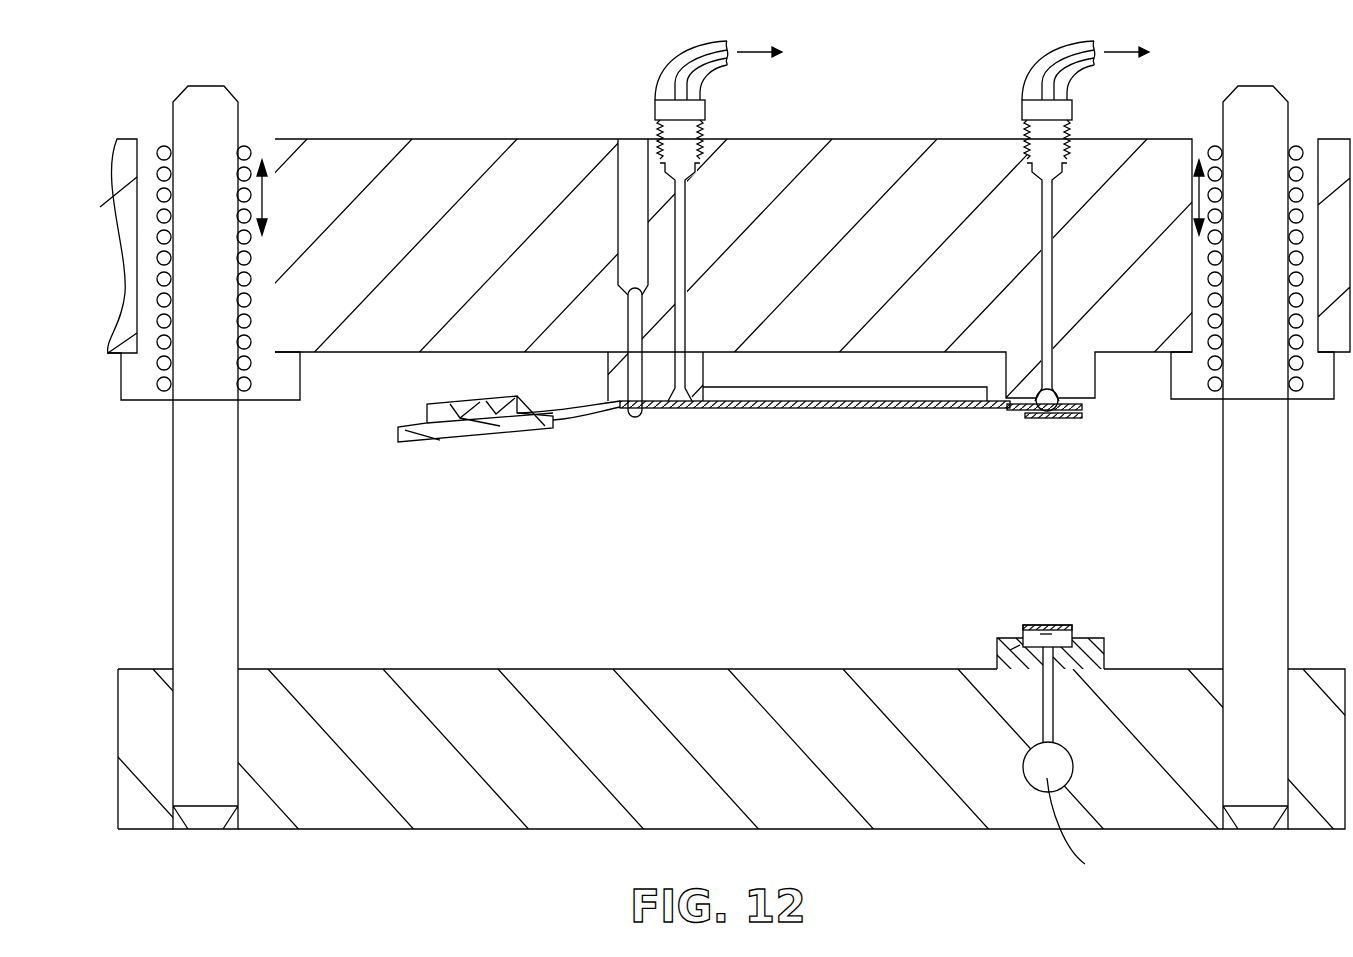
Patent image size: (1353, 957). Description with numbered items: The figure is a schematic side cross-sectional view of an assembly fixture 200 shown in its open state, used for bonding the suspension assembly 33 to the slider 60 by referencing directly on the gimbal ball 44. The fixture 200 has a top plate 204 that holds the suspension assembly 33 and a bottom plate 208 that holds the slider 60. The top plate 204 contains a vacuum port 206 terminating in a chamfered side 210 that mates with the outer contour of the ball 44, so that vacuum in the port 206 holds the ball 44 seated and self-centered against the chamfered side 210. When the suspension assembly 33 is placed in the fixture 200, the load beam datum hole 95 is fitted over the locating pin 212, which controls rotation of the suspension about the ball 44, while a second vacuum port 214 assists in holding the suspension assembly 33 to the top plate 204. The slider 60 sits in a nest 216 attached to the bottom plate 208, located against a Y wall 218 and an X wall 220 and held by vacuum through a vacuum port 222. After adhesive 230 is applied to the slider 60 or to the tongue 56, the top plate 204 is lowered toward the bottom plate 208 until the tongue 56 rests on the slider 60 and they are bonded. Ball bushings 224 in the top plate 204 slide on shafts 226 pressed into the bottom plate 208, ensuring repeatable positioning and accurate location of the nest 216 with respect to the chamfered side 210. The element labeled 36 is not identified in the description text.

The assembly fixture 200 is at (460, 108).
The top plate 204 is at (923, 138).
The vacuum port 206 is at (1050, 262).
The bottom plate 208 is at (662, 668).
The chamfered side 210 is at (1052, 395).
The locating pin 212 is at (640, 420).
The second vacuum port 214 is at (684, 290).
The nest 216 is at (1140, 643).
The Y wall 218 is at (1020, 640).
The X wall 220 is at (1082, 641).
The vacuum port 222 is at (1053, 702).
The ball bushings 224 is at (262, 391).
The shafts 226 is at (230, 500).
The adhesive 230 is at (1040, 623).
The suspension assembly 33 is at (832, 410).
The plate 36 is at (930, 411).
The gimbal ball 44 is at (1046, 413).
The tongue 56 is at (1049, 414).
The slider 60 is at (1050, 632).
The load beam datum hole 95 is at (622, 412).